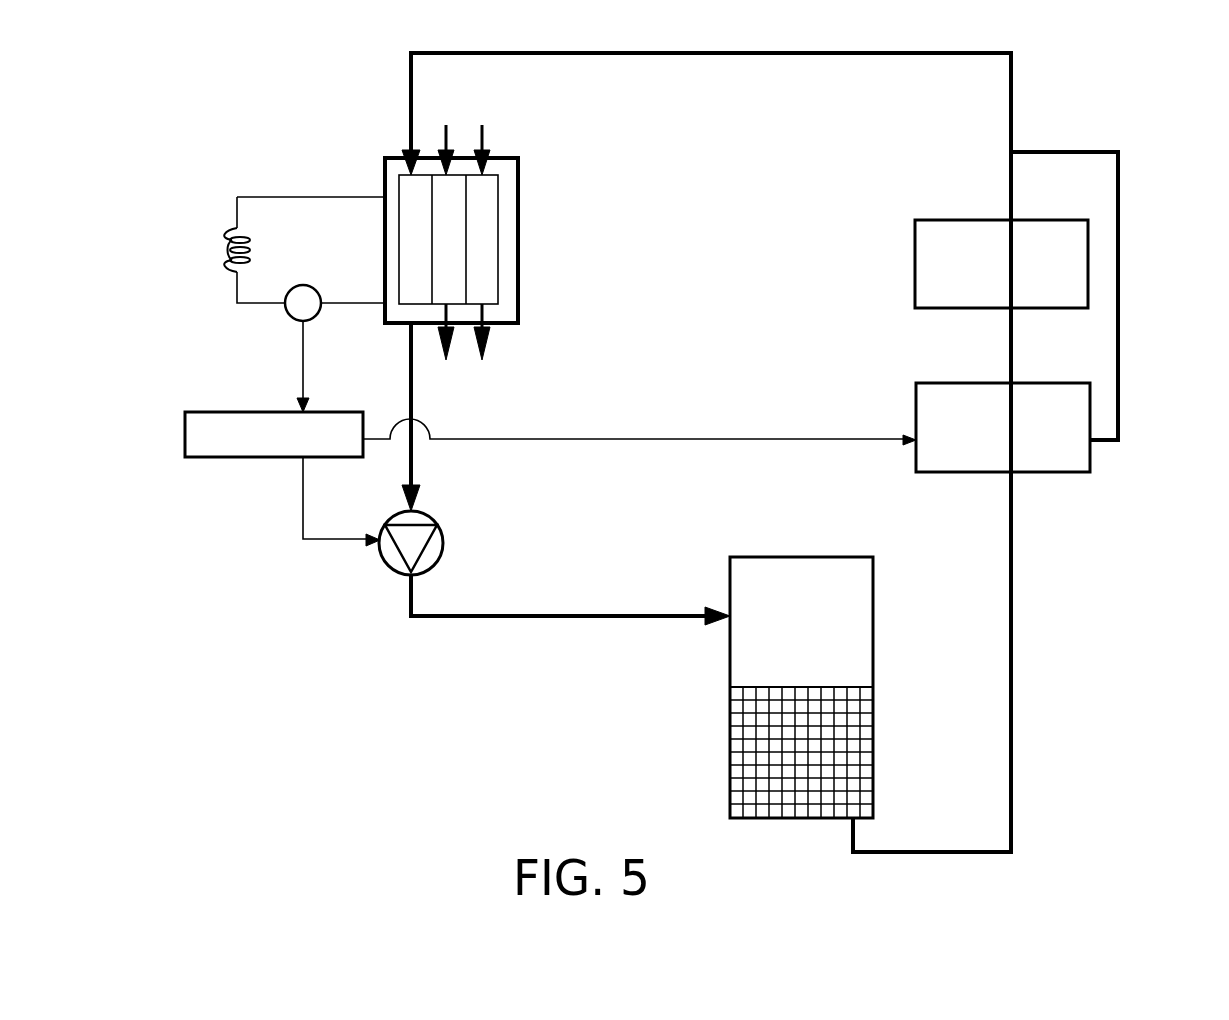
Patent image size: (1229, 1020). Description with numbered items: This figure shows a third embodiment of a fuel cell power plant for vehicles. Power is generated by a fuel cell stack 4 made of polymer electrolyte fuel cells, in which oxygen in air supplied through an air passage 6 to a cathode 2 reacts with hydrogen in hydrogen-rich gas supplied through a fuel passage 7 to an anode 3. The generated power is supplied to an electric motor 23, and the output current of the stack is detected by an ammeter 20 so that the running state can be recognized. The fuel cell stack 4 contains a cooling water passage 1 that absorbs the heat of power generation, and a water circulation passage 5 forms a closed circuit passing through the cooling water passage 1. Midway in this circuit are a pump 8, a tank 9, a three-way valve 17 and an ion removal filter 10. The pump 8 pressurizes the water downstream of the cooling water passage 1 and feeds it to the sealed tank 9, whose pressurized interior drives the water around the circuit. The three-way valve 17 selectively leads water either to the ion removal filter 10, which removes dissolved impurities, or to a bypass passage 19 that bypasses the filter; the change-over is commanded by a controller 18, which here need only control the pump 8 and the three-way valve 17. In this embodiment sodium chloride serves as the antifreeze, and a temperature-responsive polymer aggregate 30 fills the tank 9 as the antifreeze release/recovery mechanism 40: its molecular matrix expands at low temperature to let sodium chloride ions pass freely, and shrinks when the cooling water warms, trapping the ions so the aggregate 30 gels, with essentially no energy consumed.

The cooling water passage 1 is at (410, 236).
The cathode 2 is at (452, 212).
The anode 3 is at (490, 278).
The fuel cell stack 4 is at (518, 245).
The water circulation passage 5 is at (1012, 88).
The air passage 6 is at (445, 224).
The fuel passage 7 is at (482, 224).
The pump 8 is at (443, 537).
The tank 9 is at (848, 557).
The ion removal filter 10 is at (940, 220).
The three-way valve 17 is at (916, 405).
The controller 18 is at (330, 412).
The bypass passage 19 is at (1120, 188).
The ammeter 20 is at (288, 313).
The electric motor 23 is at (222, 245).
The polymer aggregate 30 is at (762, 757).
The antifreeze release/recovery mechanism 40 is at (828, 680).